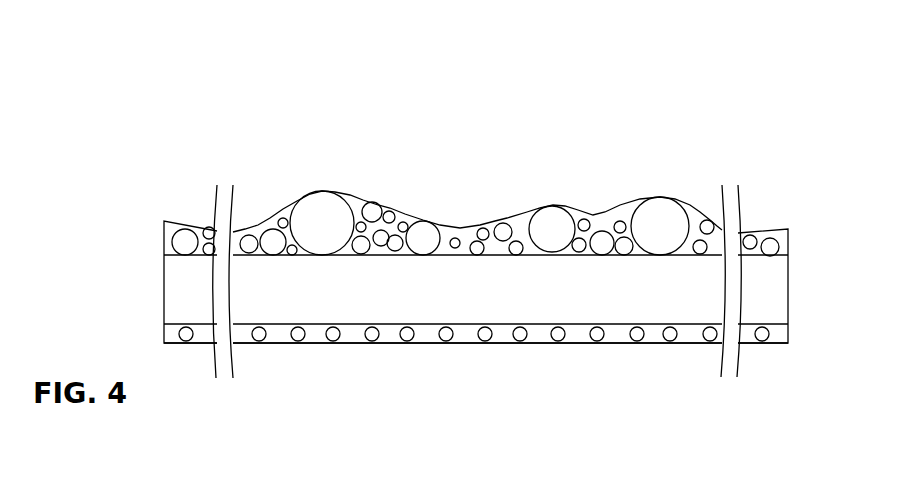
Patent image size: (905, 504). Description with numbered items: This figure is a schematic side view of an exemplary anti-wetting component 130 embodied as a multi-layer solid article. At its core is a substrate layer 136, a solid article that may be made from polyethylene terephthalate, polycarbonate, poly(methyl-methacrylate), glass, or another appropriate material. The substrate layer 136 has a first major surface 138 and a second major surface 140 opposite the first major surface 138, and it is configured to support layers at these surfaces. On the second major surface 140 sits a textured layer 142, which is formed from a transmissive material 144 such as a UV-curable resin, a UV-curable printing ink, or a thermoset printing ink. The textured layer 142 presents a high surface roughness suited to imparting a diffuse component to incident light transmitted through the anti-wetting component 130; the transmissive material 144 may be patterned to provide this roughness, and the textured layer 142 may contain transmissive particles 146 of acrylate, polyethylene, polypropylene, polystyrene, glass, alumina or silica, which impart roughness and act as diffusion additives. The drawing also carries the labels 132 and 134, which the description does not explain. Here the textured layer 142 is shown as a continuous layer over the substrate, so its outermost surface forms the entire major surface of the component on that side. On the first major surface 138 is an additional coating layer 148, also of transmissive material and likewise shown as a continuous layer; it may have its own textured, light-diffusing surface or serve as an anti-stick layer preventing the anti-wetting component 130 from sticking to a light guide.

The anti-wetting component 130 is at (231, 102).
The substrate layer 132 is at (309, 343).
The top surface 134 is at (357, 198).
The substrate layer 136 is at (508, 297).
The first major surface 138 is at (647, 325).
The second major surface 140 is at (695, 228).
The textured layer 142 is at (517, 227).
The transmissive material 144 is at (453, 230).
The transmissive particles 146 is at (602, 228).
The additional coating layer 148 is at (423, 330).